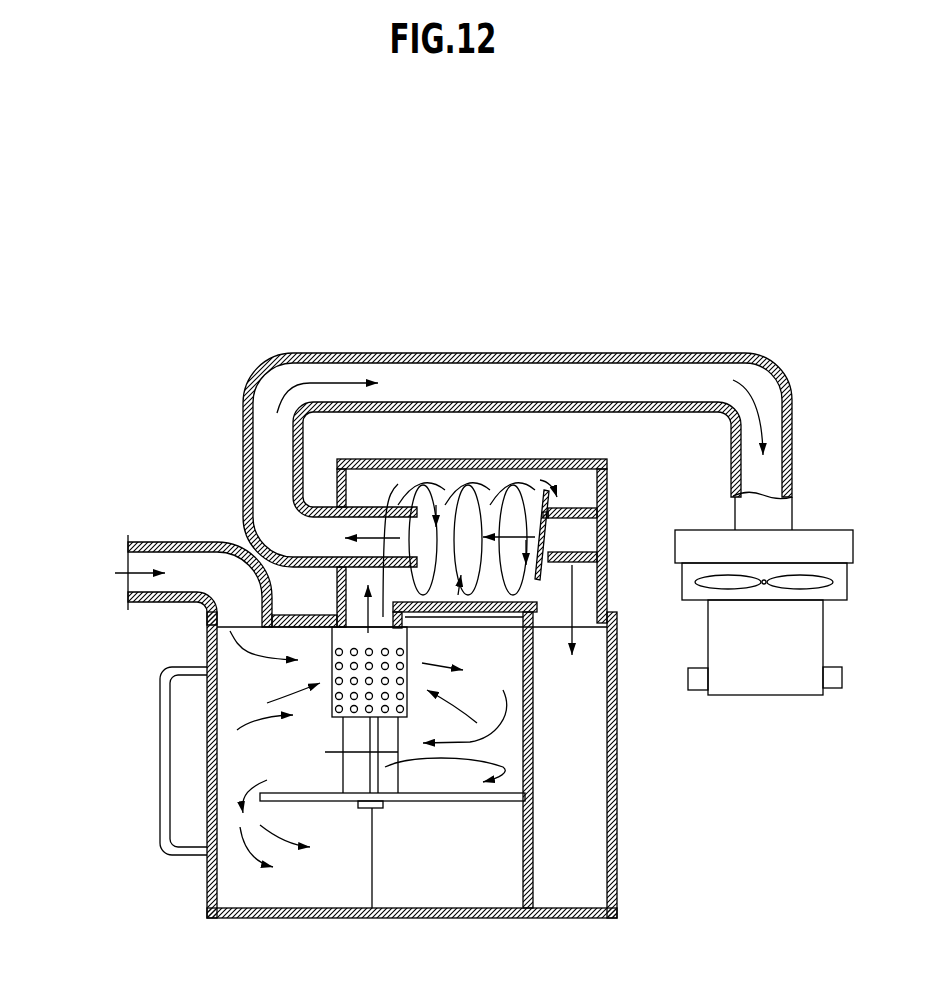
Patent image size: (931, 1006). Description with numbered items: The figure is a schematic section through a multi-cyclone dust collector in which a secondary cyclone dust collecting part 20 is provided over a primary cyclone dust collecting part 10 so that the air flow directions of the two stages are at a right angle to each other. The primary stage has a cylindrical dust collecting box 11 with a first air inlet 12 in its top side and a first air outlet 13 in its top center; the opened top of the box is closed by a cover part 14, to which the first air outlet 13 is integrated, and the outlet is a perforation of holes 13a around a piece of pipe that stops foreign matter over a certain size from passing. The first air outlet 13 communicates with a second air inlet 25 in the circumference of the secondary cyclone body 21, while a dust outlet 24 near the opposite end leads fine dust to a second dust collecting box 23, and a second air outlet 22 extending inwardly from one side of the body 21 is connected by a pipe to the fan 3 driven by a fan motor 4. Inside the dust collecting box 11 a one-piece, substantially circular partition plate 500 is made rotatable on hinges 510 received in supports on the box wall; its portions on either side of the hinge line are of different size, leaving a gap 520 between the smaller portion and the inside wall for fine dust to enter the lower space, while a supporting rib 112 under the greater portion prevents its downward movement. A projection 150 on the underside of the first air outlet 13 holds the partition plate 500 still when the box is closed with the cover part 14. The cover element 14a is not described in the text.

The fan 3 is at (833, 580).
The fan motor 4 is at (798, 642).
The primary cyclone dust collecting part 10 is at (73, 598).
The dust collecting box 11 is at (212, 777).
The first air inlet 12 is at (128, 580).
The first air outlet 13 is at (235, 707).
The holes 13a is at (353, 716).
The cover part 14 is at (212, 623).
The cover plate 14a is at (333, 671).
The secondary cyclone dust collecting part 20 is at (257, 278).
The secondary cyclone body 21 is at (535, 459).
The second air outlet 22 is at (267, 470).
The second dust collecting box 23 is at (583, 620).
The dust outlet 24 is at (614, 648).
The second air inlet 25 is at (372, 627).
The supporting rib 112 is at (520, 887).
The projection 150 is at (533, 770).
The partition plate 500 is at (503, 797).
The hinges 510 is at (372, 908).
The gap 520 is at (212, 806).